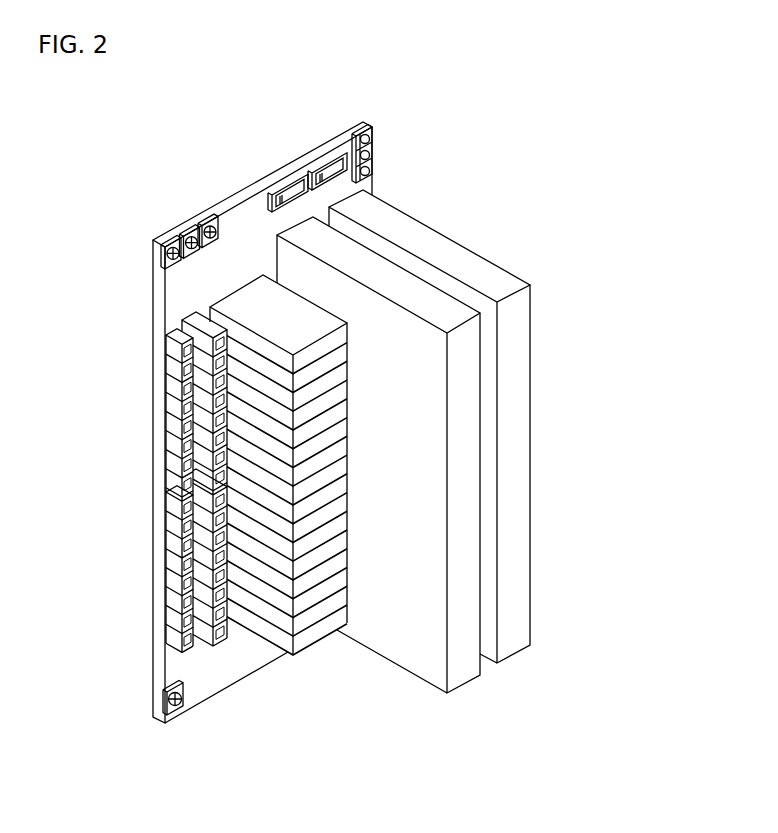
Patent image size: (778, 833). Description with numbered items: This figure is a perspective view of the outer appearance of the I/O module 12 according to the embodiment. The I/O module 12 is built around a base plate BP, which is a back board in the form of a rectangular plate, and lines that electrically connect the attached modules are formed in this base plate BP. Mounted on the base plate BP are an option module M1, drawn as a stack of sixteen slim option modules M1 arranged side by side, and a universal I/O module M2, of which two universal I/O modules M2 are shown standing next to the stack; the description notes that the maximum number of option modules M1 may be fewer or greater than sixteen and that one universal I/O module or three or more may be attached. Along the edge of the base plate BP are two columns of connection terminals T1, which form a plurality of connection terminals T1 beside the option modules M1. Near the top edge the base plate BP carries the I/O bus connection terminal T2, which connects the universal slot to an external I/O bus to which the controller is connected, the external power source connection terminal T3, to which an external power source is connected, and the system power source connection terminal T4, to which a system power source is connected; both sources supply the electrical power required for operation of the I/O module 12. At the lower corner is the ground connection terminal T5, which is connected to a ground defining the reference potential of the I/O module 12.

The I/O module 12 is at (540, 158).
The base plate BP is at (257, 187).
The connection terminals T1 is at (176, 620).
The I/O bus connection terminal T2 is at (308, 166).
The external power source connection terminal T3 is at (193, 223).
The system power source connection terminal T4 is at (373, 150).
The ground connection terminal T5 is at (178, 714).
The option module M1 is at (323, 590).
The universal I/O module M2 is at (462, 675).